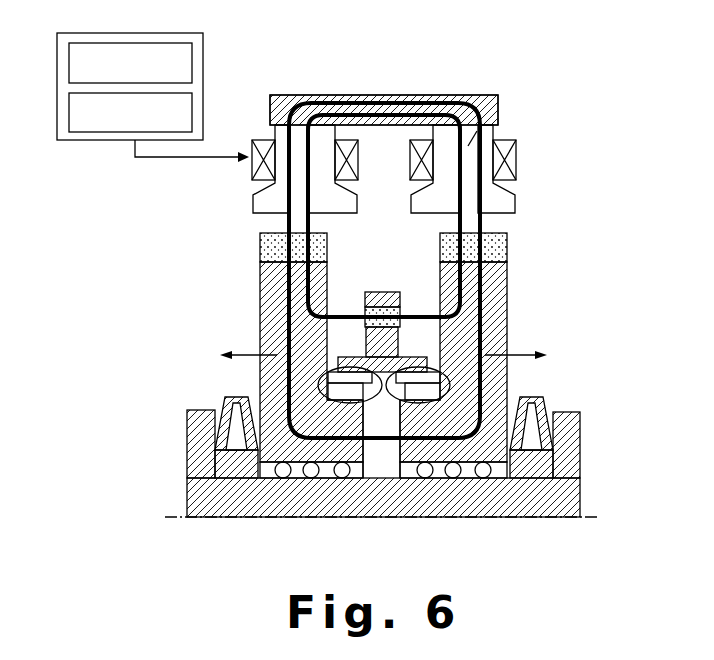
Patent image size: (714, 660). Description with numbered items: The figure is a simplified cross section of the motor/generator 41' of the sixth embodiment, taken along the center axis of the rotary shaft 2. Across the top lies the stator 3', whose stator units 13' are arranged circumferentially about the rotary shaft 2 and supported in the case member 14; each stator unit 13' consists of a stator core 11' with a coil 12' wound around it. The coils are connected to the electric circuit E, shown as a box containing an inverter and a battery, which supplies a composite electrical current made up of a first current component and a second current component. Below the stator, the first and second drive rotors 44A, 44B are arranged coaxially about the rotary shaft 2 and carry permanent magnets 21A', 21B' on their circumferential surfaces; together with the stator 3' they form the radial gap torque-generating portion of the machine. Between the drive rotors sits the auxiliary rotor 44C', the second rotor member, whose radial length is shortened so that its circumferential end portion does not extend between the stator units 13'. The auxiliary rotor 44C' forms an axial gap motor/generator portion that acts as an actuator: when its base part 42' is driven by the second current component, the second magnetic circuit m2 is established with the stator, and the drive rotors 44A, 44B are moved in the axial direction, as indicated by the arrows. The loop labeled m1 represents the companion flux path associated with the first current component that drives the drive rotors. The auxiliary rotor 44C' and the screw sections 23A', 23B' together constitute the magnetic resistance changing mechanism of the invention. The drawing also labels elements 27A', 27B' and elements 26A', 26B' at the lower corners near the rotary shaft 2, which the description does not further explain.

The electric circuit E is at (203, 66).
The case member 14 is at (282, 94).
The stator 3' is at (384, 75).
The motor/generator 41' is at (450, 119).
The stator core 11' is at (424, 153).
The coil 12' is at (424, 158).
The stator unit 13' is at (450, 152).
The first magnetic flux loop m1 is at (352, 93).
The second magnetic circuit m2 is at (397, 93).
The permanent magnet 21A' is at (252, 232).
The permanent magnet 21B' is at (528, 232).
The first drive rotor 44A is at (270, 298).
The second drive rotor 44B is at (495, 282).
The auxiliary rotor 44C' is at (492, 324).
The base part 42' is at (469, 405).
The screw section 23A' is at (263, 385).
The screw section 23B' is at (505, 385).
The left spring 27A' is at (178, 437).
The right spring 27B' is at (581, 437).
The left stopper block 26A' is at (152, 444).
The right stopper block 26B' is at (603, 445).
The rotary shaft 2 is at (508, 500).